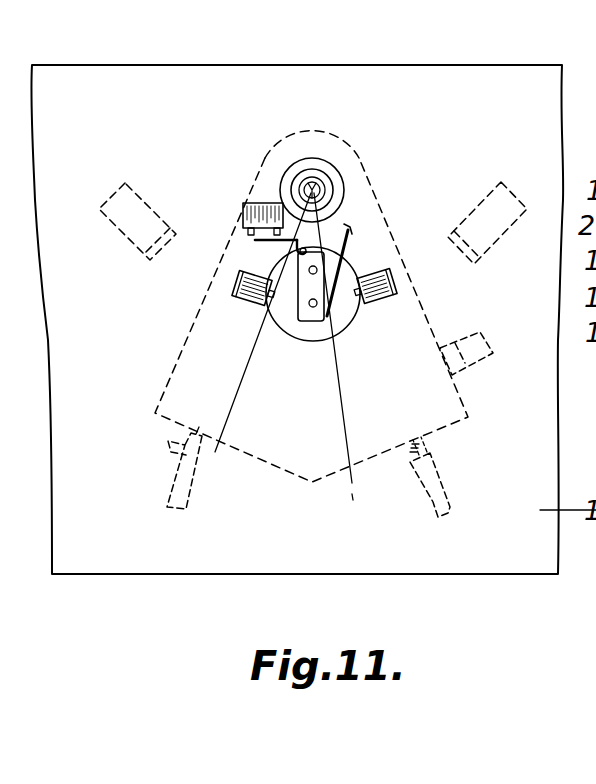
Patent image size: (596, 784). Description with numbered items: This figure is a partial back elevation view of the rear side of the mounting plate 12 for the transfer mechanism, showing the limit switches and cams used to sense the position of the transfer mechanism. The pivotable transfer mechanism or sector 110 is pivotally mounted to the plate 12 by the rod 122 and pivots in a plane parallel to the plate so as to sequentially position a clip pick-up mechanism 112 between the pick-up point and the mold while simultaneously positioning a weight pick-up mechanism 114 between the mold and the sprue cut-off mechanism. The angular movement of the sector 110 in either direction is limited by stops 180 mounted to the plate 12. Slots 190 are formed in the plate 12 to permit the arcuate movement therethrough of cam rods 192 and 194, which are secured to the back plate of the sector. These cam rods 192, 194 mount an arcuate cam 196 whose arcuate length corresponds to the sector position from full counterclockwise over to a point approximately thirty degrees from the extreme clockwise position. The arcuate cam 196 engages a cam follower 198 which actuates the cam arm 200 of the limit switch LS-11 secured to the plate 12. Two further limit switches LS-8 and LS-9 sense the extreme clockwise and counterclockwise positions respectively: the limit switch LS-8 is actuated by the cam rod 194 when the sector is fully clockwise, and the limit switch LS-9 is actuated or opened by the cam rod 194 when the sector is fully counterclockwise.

The plate 12 is at (310, 128).
The sector 110 is at (453, 425).
The clip pick-up mechanism 112 is at (443, 489).
The weight pick-up mechanism 114 is at (190, 499).
The rod 122 is at (316, 184).
The stops 180 is at (143, 200).
The slots 190 is at (338, 321).
The cam rod 192 is at (319, 269).
The cam rod 194 is at (309, 307).
The arcuate cam 196 is at (352, 229).
The cam follower 198 is at (250, 252).
The cam arm 200 is at (296, 251).
The limit switch LS-11 is at (263, 205).
The limit switch LS-9 is at (236, 292).
The limit switch LS-8 is at (393, 289).